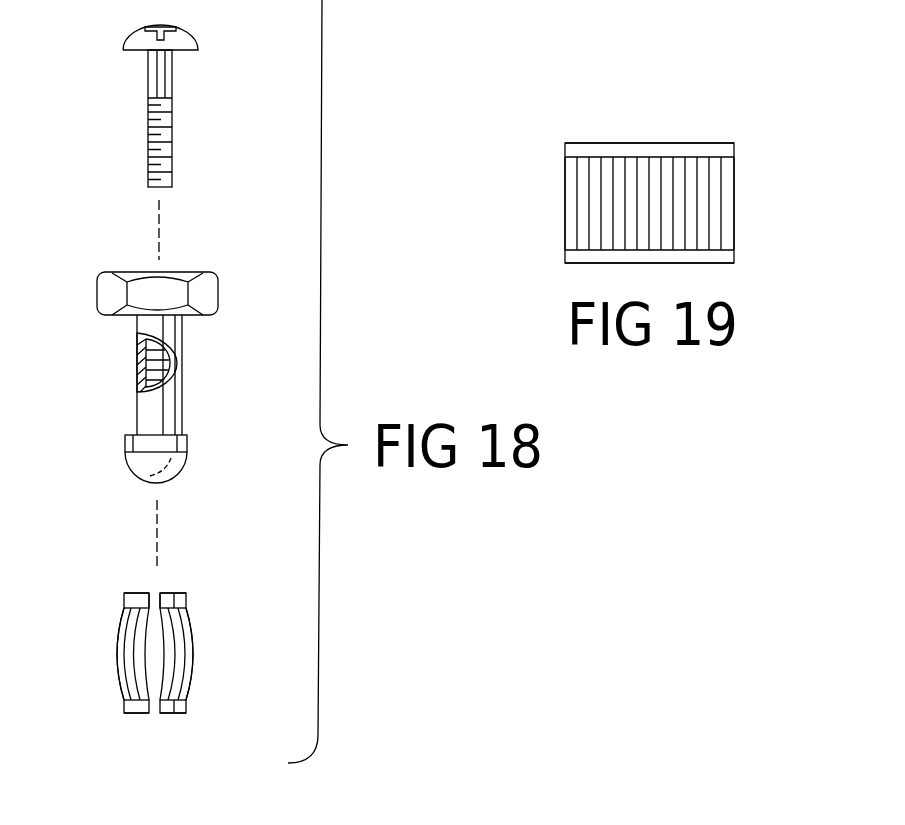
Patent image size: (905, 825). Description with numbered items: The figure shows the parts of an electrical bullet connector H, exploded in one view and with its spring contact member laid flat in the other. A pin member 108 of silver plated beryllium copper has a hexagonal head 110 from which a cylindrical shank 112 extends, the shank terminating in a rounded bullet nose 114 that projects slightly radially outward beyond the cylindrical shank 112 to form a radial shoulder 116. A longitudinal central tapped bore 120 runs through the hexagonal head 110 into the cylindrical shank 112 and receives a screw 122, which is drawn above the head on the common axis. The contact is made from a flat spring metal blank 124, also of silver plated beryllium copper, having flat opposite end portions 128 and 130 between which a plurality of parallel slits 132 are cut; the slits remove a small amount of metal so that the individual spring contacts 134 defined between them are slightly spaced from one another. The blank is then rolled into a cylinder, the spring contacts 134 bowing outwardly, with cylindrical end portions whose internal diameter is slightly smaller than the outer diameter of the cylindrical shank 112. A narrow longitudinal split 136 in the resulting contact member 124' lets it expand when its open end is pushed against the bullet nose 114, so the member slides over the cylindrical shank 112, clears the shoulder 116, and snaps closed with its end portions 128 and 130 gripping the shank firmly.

In FIG. 18, the electrical bullet connector H is at (104, 138).
In FIG. 18, the pin member 108 is at (114, 255).
In FIG. 18, the hexagonal head 110 is at (190, 272).
In FIG. 18, the cylindrical shank 112 is at (183, 351).
In FIG. 18, the rounded bullet nose 114 is at (176, 462).
In FIG. 18, the radial shoulder 116 is at (187, 432).
In FIG. 18, the longitudinal central tapped bore 120 is at (137, 355).
In FIG. 18, the screw 122 is at (171, 128).
In FIG. 19, the flat spring metal blank 124 is at (649, 163).
In FIG. 18, the contact member 124' is at (113, 680).
In FIG. 18, the flat end portion 128 is at (182, 598).
In FIG. 19, the flat end portion 128 is at (735, 143).
In FIG. 18, the flat end portion 130 is at (178, 708).
In FIG. 19, the flat end portion 130 is at (735, 255).
In FIG. 19, the parallel slits 132 is at (722, 195).
In FIG. 18, the spring contacts 134 is at (118, 641).
In FIG. 19, the spring contacts 134 is at (734, 228).
In FIG. 18, the narrow longitudinal split 136 is at (156, 592).